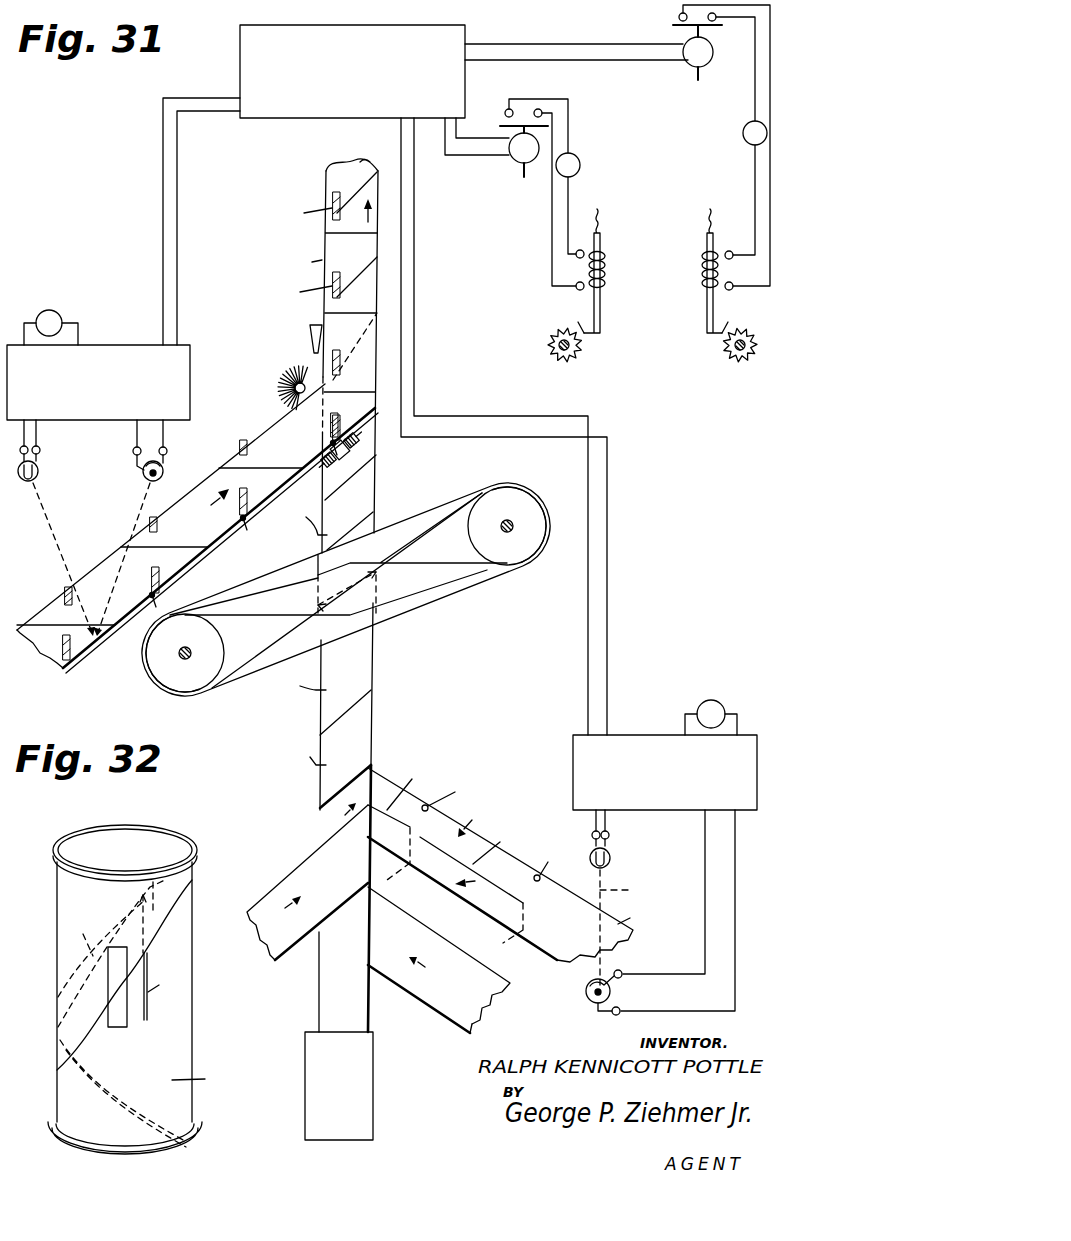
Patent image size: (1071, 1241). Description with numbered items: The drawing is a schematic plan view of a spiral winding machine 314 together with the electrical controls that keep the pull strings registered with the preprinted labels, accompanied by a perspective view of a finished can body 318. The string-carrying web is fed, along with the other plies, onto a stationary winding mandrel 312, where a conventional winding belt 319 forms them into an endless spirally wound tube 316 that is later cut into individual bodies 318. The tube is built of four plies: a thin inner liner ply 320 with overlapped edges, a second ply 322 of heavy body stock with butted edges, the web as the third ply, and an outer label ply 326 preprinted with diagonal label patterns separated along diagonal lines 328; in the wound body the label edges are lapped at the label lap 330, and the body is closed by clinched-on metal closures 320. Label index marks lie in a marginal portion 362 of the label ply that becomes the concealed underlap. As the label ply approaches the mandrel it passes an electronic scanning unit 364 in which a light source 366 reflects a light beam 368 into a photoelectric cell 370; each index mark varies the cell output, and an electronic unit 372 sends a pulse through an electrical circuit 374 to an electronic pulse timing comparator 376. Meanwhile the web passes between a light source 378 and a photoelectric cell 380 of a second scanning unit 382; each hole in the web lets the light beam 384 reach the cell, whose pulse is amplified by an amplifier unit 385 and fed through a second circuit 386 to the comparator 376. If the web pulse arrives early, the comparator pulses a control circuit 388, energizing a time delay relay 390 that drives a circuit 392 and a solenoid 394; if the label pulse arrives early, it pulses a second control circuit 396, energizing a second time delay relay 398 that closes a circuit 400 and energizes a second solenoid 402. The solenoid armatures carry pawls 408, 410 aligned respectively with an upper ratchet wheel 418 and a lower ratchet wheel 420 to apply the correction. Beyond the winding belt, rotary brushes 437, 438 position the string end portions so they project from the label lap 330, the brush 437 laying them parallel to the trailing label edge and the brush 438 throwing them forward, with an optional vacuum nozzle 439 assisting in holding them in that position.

In FIG. 31, the stationary winding mandrel 312 is at (328, 996).
In FIG. 31, the spiral winding machine 314 is at (414, 612).
In FIG. 31, the spirally wound tube 316 is at (313, 187).
In FIG. 32, the can body 318 is at (182, 1042).
In FIG. 31, the winding belt 319 is at (468, 578).
In FIG. 31, the inner liner ply / metal closures 320 is at (425, 997).
In FIG. 32, the inner liner ply / metal closures 320 is at (155, 840).
In FIG. 31, the second ply 322 is at (305, 866).
In FIG. 31, the label ply 326 is at (268, 428).
In FIG. 31, the diagonal lines 328 is at (290, 468).
In FIG. 31, the label lap 330 is at (348, 352).
In FIG. 32, the label lap 330 is at (92, 1013).
In FIG. 31, the marginal label portion 362 is at (182, 566).
In FIG. 31, the electronic scanning unit 364 is at (108, 330).
In FIG. 31, the light source 366 is at (39, 473).
In FIG. 31, the light beam 368 is at (60, 550).
In FIG. 31, the photoelectric cell 370 is at (144, 478).
In FIG. 31, the electronic unit 372 is at (106, 414).
In FIG. 31, the electrical circuit 374 is at (165, 243).
In FIG. 31, the electronic pulse timing comparator 376 is at (362, 24).
In FIG. 31, the light source 378 is at (611, 860).
In FIG. 31, the photoelectric cell 380 is at (612, 991).
In FIG. 31, the second scanning unit 382 is at (648, 720).
In FIG. 31, the light beam 384 is at (636, 927).
In FIG. 31, the amplifier unit 385 is at (688, 800).
In FIG. 31, the second circuit 386 is at (414, 130).
In FIG. 31, the control circuit 388 is at (454, 154).
In FIG. 31, the time delay relay 390 is at (522, 164).
In FIG. 31, the circuit 392 is at (570, 196).
In FIG. 31, the solenoid 394 is at (600, 270).
In FIG. 31, the second control circuit 396 is at (560, 48).
In FIG. 31, the second time delay relay 398 is at (706, 60).
In FIG. 31, the circuit 400 is at (755, 104).
In FIG. 31, the second solenoid 402 is at (702, 270).
In FIG. 31, the pawl 408 is at (588, 328).
In FIG. 31, the pawl 410 is at (722, 332).
In FIG. 31, the upper ratchet wheel 418 is at (548, 349).
In FIG. 31, the lower ratchet wheel 420 is at (742, 360).
In FIG. 31, the rotary brush 437 is at (352, 444).
In FIG. 31, the rotary brush 438 is at (295, 378).
In FIG. 31, the vacuum nozzle 439 is at (309, 336).